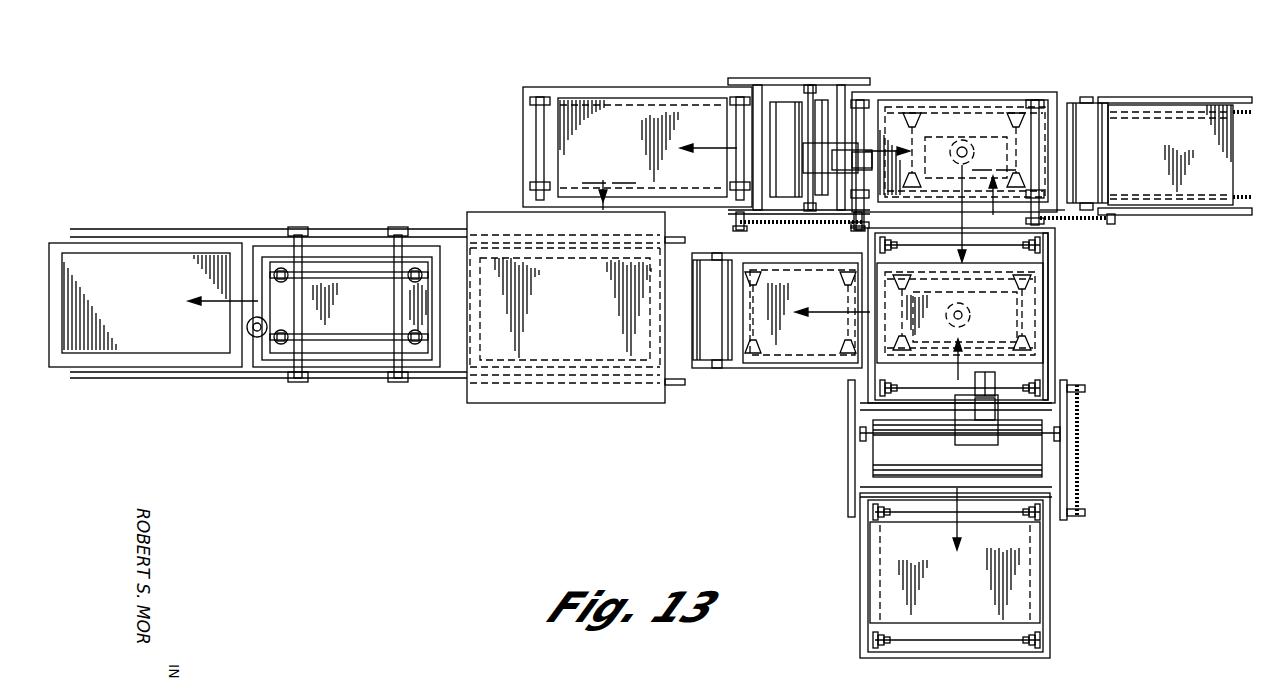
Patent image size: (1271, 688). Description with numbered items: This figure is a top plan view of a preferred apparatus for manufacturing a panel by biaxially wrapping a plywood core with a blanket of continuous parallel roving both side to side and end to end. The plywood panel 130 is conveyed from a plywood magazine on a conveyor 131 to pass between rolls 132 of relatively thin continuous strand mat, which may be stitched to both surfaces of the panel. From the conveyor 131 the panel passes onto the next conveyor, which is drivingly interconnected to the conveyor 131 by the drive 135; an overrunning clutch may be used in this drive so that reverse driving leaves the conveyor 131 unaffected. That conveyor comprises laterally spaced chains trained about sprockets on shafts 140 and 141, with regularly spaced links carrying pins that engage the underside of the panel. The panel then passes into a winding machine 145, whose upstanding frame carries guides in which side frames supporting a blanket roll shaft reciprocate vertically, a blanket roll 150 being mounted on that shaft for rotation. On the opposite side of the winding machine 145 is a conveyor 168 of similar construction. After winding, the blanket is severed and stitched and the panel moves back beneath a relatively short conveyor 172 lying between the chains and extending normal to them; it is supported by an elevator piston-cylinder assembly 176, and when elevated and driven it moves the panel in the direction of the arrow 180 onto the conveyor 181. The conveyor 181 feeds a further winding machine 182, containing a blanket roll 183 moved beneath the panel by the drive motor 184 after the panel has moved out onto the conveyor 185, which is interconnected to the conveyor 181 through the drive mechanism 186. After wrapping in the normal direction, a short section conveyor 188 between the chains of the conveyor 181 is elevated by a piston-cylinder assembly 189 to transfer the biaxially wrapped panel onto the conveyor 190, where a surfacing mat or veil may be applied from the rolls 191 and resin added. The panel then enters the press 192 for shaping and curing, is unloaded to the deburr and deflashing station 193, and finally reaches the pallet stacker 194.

The plywood panel 130 is at (1173, 125).
The conveyor 131 is at (1245, 110).
The rolls of continuous strand mat 132 is at (1102, 137).
The drive 135 is at (1088, 222).
The shaft 140 is at (868, 110).
The shaft 141 is at (1022, 105).
The winding machine 145 is at (806, 78).
The blanket roll 150 is at (788, 105).
The conveyor 168 is at (637, 105).
The conveyor 172 is at (937, 118).
The elevator piston-cylinder assembly 176 is at (973, 137).
The arrow 180 is at (962, 238).
The conveyor 181 is at (1048, 260).
The winding machine 182 is at (1086, 441).
The blanket roll 183 is at (875, 448).
The drive motor 184 is at (975, 382).
The conveyor 185 is at (1045, 572).
The drive mechanism 186 is at (1080, 473).
The section conveyor 188 is at (1042, 323).
The piston-cylinder assembly 189 is at (972, 303).
The conveyor 190 is at (792, 358).
The rolls 191 is at (735, 357).
The press 192 is at (557, 400).
The deburr and deflashing station 193 is at (350, 362).
The pallet stacker 194 is at (181, 363).